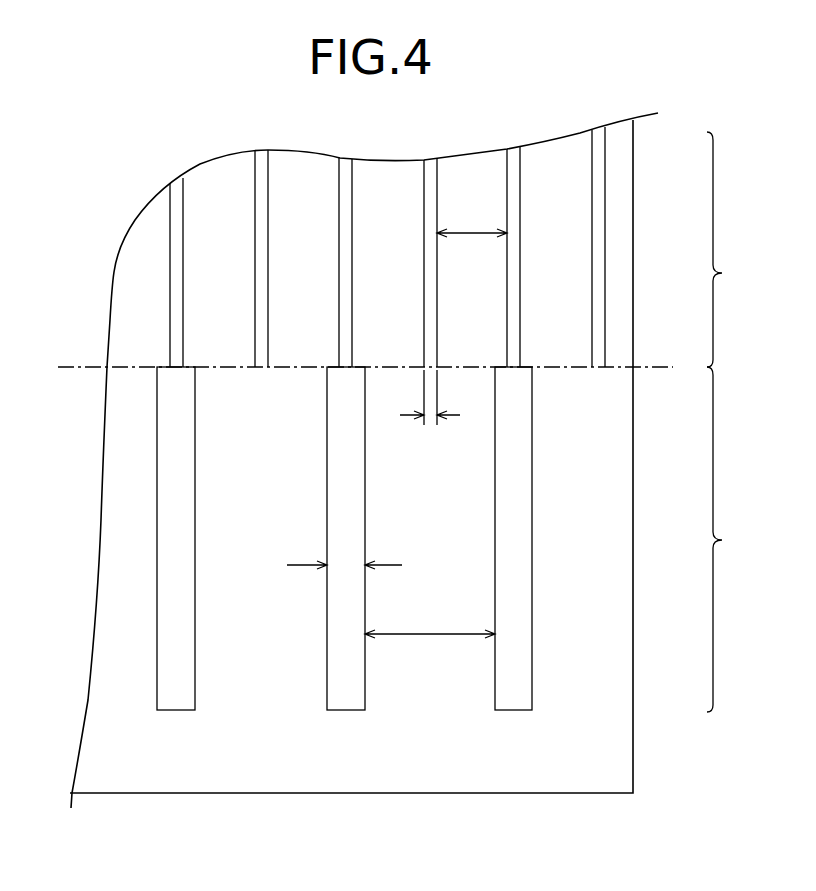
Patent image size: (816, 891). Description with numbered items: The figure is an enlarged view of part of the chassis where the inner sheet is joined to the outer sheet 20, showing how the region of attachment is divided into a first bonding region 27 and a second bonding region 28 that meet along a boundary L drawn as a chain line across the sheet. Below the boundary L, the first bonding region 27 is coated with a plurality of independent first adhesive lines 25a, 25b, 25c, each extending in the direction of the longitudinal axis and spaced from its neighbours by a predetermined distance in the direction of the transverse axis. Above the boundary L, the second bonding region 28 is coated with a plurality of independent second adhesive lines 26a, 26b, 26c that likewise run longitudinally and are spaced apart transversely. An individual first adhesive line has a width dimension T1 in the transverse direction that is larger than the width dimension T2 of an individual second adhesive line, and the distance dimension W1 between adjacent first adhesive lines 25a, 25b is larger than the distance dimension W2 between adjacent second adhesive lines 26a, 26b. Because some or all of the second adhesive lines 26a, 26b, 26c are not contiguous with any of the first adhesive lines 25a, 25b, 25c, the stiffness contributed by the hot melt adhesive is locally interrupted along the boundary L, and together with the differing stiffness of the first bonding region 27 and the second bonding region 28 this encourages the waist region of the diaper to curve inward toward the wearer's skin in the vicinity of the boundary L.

The outer sheet 20 is at (604, 797).
The boundary L is at (661, 371).
The first adhesive line 25a is at (515, 712).
The first adhesive line 25b is at (345, 712).
The first adhesive line 25c is at (175, 712).
The second adhesive line 26a is at (605, 298).
The second adhesive line 26b is at (520, 312).
The second adhesive line 26c is at (437, 312).
The first bonding region 27 is at (733, 539).
The second bonding region 28 is at (733, 249).
The distance dimension W1 is at (425, 637).
The distance dimension W2 is at (470, 230).
The width dimension T1 is at (345, 567).
The width dimension T2 is at (430, 422).